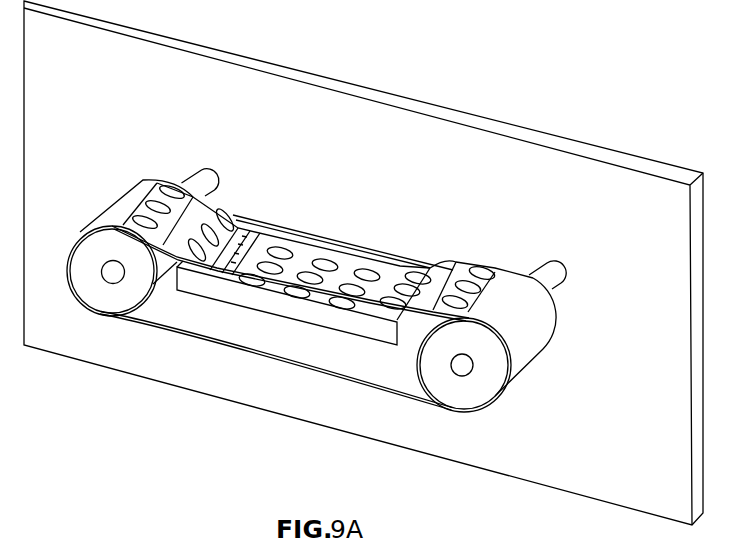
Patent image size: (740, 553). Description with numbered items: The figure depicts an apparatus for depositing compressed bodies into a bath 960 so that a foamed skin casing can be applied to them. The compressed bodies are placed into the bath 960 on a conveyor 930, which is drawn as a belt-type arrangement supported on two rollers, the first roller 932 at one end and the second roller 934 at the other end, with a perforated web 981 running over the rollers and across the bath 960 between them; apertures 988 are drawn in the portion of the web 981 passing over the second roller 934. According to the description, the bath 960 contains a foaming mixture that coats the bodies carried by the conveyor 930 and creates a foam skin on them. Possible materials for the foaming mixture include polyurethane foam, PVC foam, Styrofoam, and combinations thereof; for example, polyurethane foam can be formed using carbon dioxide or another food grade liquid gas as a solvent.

The conveyor 930 is at (143, 272).
The first roller front face / hub 932 is at (123, 297).
The second roller 934 is at (482, 393).
The bath 960 is at (305, 245).
The perforated web 981 is at (232, 222).
The web apertures on second roller 988 is at (482, 270).